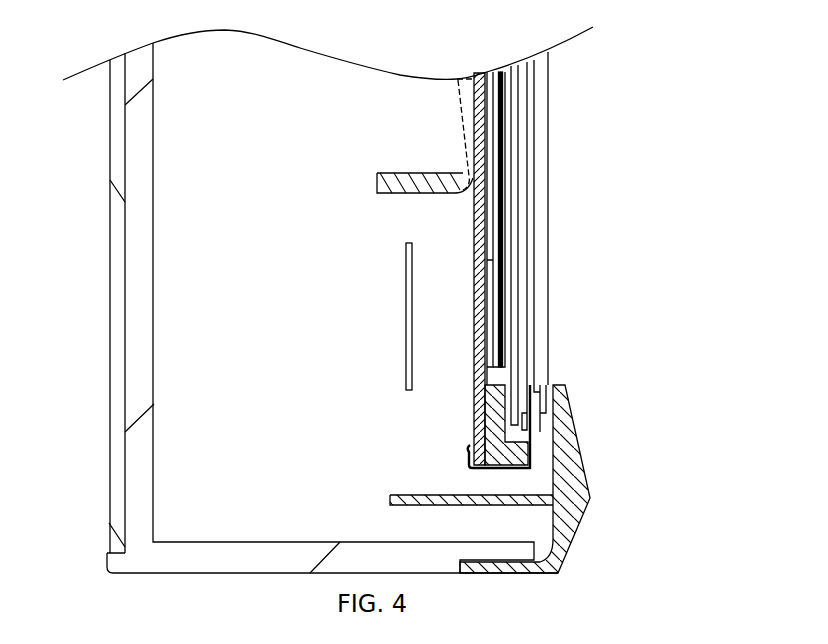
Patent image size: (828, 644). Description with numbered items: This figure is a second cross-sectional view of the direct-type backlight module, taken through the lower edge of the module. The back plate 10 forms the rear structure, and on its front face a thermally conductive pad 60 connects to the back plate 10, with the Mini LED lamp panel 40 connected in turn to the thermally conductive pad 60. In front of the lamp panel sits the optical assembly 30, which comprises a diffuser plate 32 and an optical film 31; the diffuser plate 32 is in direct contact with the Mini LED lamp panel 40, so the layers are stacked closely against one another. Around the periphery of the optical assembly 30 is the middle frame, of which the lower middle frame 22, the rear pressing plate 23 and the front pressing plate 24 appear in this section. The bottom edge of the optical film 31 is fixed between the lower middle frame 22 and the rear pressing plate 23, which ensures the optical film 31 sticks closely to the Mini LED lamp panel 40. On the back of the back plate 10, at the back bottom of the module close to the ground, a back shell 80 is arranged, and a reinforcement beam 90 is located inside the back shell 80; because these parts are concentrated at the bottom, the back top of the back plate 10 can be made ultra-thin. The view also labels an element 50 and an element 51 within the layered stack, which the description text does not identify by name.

The back plate 10 is at (483, 110).
The lower middle frame 22 is at (510, 445).
The rear pressing plate 23 is at (527, 430).
The front pressing plate 24 is at (563, 497).
The optical assembly 30 is at (606, 246).
The optical film 31 is at (523, 208).
The diffuser plate 32 is at (513, 235).
The Mini LED lamp panel 40 is at (505, 265).
The outer cover 50 is at (545, 158).
The cover inner layer 51 is at (488, 322).
The thermally conductive pad 60 is at (497, 307).
The back shell 80 is at (139, 378).
The reinforcement beam 90 is at (463, 125).